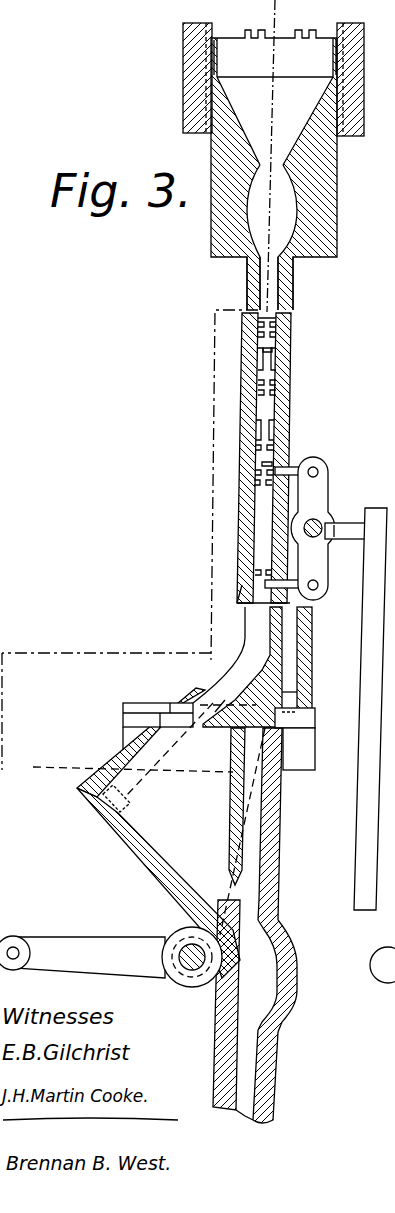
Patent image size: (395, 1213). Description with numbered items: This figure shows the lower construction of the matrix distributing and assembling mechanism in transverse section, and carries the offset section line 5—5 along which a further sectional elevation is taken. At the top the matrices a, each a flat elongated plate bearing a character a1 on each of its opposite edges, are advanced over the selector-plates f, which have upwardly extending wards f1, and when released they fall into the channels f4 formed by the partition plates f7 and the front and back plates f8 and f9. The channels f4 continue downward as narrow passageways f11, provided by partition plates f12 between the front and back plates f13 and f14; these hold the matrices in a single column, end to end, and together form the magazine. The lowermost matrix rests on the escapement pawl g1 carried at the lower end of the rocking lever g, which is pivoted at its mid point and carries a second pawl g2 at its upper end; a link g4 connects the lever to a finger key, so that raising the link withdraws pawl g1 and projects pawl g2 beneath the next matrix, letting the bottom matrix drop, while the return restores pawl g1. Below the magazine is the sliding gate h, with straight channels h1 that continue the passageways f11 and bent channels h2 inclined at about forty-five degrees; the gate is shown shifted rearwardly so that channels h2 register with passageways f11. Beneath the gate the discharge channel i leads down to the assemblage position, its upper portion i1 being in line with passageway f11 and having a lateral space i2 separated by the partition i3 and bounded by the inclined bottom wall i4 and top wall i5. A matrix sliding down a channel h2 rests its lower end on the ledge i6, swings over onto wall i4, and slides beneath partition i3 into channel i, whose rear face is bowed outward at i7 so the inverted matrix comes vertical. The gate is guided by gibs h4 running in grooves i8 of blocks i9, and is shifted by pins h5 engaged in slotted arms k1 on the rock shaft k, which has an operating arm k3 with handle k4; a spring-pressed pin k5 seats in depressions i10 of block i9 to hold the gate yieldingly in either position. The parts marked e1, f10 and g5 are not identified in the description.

The section line 5 is at (268, 36).
The nozzle clamping blocks e1 is at (183, 78).
The selector-plate f is at (275, 57).
The wards f1 is at (250, 40).
The channels f4 is at (275, 194).
The partition plates f7 is at (272, 237).
The front plate f8 is at (215, 200).
The back plate f9 is at (334, 190).
The chamber side walls f10 is at (275, 57).
The passageways f11 is at (284, 290).
The partition plates f12 is at (248, 280).
The front plate f13 is at (246, 368).
The back plate f14 is at (287, 370).
The matrix a is at (284, 322).
The character a1 is at (262, 465).
The rocking lever g is at (326, 498).
The escapement pawl g1 is at (288, 581).
The pawl g2 is at (308, 466).
The link g4 is at (370, 709).
The lever arm g5 is at (352, 540).
The gate h is at (312, 640).
The channels h1 is at (290, 670).
The channels h2 is at (237, 667).
The gibs h4 is at (166, 715).
The pins h5 is at (282, 692).
The discharge channel i is at (245, 1085).
The upper portion of discharge channel i1 is at (262, 835).
The lateral space i2 is at (144, 755).
The partition i3 is at (235, 750).
The bottom plate i4 is at (150, 868).
The top plate i5 is at (120, 750).
The ledge i6 is at (127, 800).
The outward bow i7 is at (292, 970).
The grooves i8 is at (135, 716).
The blocks i9 is at (146, 705).
The depressions i10 is at (224, 697).
The rock shaft k is at (180, 957).
The rigid arms k1 is at (210, 832).
The operating arm k3 is at (89, 957).
The handle k4 is at (22, 938).
The pin k5 is at (299, 749).